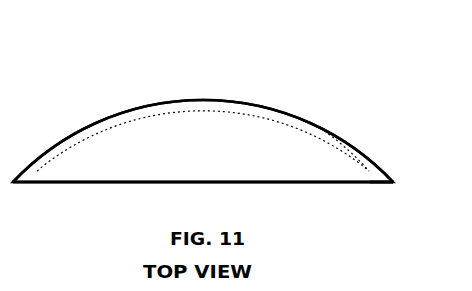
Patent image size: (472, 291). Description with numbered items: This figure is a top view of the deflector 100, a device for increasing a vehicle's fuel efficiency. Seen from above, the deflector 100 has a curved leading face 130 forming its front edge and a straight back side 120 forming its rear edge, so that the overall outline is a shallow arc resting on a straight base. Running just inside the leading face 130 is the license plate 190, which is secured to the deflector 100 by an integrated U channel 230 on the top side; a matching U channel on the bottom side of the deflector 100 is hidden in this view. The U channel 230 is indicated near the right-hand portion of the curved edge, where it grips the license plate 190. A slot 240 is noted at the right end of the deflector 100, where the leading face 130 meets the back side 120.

The deflector 100 is at (249, 143).
The back side 120 is at (279, 187).
The leading face 130 is at (205, 97).
The license plate 190 is at (123, 122).
The U channel 230 is at (361, 156).
The slot 240 is at (385, 184).